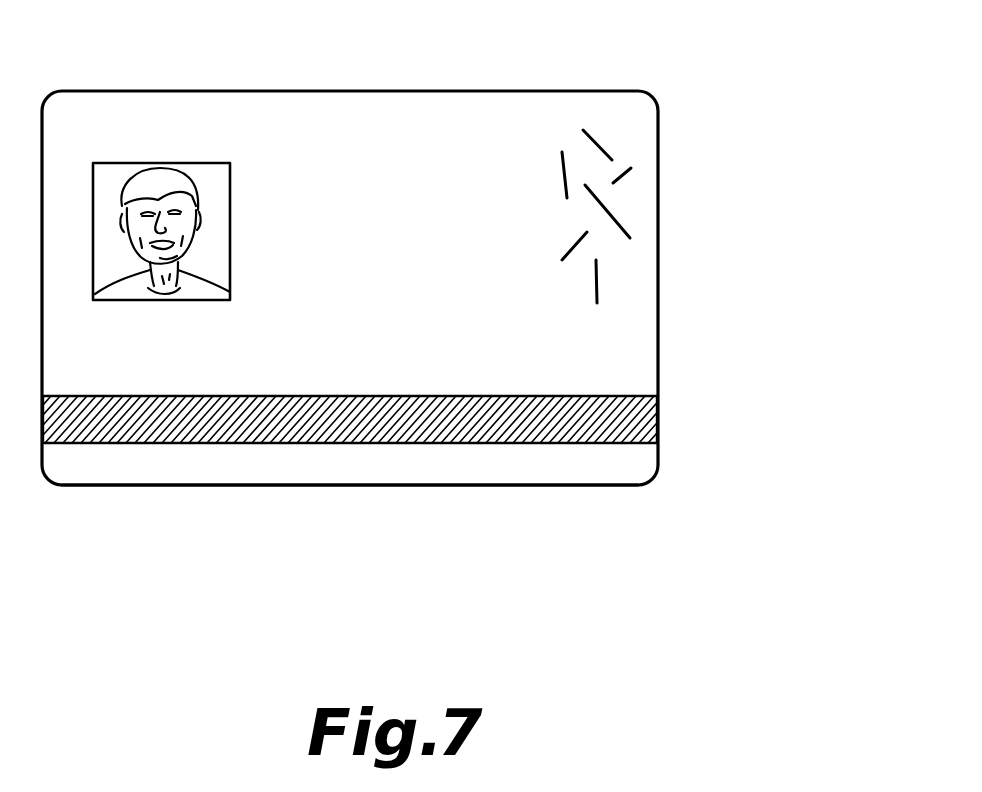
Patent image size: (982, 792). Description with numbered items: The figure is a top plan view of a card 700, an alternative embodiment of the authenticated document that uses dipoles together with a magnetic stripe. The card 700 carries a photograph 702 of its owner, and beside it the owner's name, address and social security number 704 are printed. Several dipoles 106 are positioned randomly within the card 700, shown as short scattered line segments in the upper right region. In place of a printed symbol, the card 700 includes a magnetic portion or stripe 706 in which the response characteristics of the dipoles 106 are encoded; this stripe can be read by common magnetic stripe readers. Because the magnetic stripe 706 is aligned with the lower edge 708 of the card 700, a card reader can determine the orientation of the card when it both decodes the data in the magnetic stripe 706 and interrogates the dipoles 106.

The card 700 is at (742, 292).
The photograph 702 is at (173, 162).
The owner's name, address and social security number 704 is at (352, 158).
The magnetic stripe 706 is at (618, 403).
The lower edge 708 is at (377, 487).
The dipoles 106 is at (603, 142).